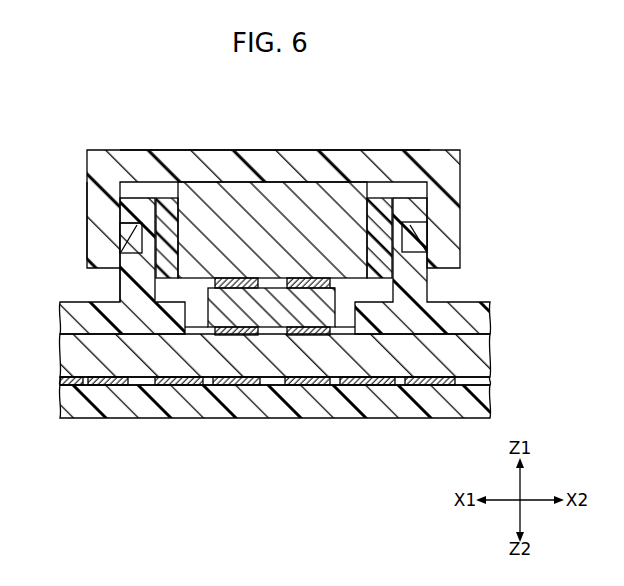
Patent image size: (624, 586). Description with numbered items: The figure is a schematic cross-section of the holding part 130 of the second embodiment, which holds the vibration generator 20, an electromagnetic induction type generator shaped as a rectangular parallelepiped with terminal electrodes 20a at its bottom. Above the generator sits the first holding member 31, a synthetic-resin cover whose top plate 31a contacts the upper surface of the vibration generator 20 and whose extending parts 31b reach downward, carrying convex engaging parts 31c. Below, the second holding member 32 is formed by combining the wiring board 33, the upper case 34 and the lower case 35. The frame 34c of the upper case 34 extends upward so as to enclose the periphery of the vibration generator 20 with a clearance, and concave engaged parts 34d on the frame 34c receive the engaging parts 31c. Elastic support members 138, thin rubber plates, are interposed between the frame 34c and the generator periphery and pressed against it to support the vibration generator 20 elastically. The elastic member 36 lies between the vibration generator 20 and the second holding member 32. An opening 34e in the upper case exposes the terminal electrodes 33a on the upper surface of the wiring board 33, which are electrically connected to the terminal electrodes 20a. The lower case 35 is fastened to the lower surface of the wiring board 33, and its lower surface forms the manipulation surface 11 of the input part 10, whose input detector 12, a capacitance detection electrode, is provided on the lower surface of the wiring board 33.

The holding part 130 is at (94, 117).
The first holding member 31 is at (208, 149).
The top plate 31a is at (175, 149).
The extending part 31b is at (98, 195).
The engaging part 31c is at (130, 227).
The vibration generator 20 is at (275, 208).
The terminal electrodes 20a is at (305, 287).
The elastic support member 138 is at (373, 223).
The elastic member 36 is at (332, 288).
The upper case 34 is at (470, 313).
The frame 34c is at (140, 283).
The engaged part 34d is at (123, 227).
The opening 34e is at (190, 306).
The wiring board 33 is at (470, 348).
The terminal electrodes 33a is at (293, 336).
The lower case 35 is at (295, 401).
The second holding member 32 is at (298, 324).
The input detector 12 is at (238, 379).
The manipulation surface 11 is at (285, 379).
The input part 10 is at (257, 446).